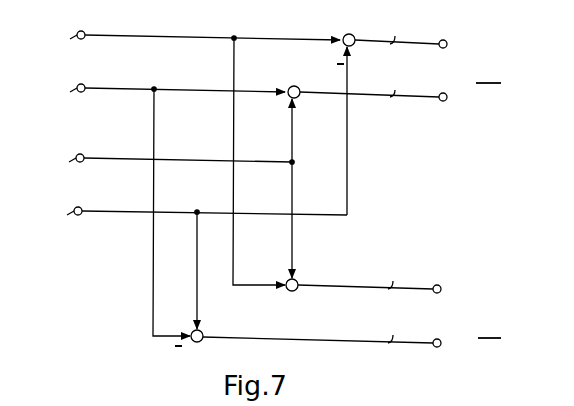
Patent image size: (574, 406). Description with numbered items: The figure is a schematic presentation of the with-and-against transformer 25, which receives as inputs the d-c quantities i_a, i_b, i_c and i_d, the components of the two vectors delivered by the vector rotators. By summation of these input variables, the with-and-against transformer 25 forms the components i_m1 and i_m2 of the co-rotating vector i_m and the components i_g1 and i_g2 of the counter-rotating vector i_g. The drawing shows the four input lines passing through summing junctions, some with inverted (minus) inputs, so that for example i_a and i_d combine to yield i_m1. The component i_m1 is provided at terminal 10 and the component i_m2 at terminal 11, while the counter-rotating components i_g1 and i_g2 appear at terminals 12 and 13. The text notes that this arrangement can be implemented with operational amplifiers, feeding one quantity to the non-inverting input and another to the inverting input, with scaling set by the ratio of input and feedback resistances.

The terminal 10 is at (447, 44).
The terminal 11 is at (447, 97).
The terminal 12 is at (441, 289).
The terminal 13 is at (441, 343).
The with-and-against transformer 25 is at (405, 163).